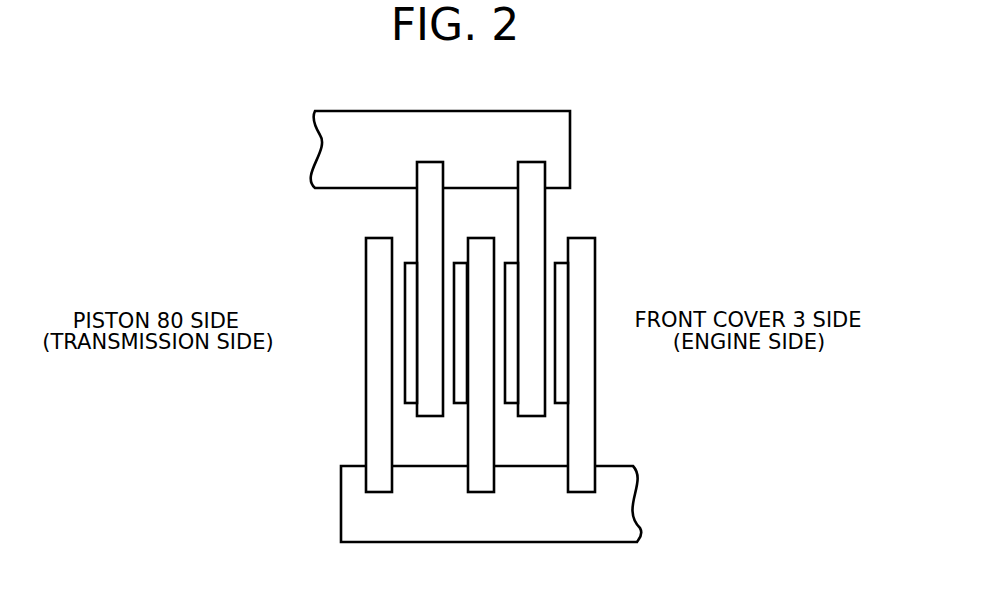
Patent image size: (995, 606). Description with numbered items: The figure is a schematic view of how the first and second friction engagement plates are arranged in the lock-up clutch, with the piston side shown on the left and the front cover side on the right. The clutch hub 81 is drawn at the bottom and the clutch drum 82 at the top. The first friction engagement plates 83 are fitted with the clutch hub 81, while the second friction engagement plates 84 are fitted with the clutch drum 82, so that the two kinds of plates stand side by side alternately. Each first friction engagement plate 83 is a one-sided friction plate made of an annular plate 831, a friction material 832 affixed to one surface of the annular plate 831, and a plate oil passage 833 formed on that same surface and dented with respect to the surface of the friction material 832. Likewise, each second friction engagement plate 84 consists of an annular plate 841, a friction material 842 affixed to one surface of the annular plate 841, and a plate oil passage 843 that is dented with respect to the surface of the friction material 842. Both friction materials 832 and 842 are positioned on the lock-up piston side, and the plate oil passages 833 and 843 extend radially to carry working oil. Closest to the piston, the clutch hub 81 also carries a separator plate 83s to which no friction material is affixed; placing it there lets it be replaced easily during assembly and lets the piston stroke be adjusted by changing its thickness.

The clutch hub 81 is at (362, 528).
The clutch drum 82 is at (544, 123).
The first friction engagement plate 83 is at (500, 478).
The annular plate 831 is at (480, 435).
The friction material 832 is at (563, 380).
The plate oil passage 833 is at (568, 333).
The separator plate 83s is at (382, 450).
The second friction engagement plate 84 is at (512, 175).
The annular plate 841 is at (430, 221).
The friction material 842 is at (512, 283).
The plate oil passage 843 is at (520, 325).